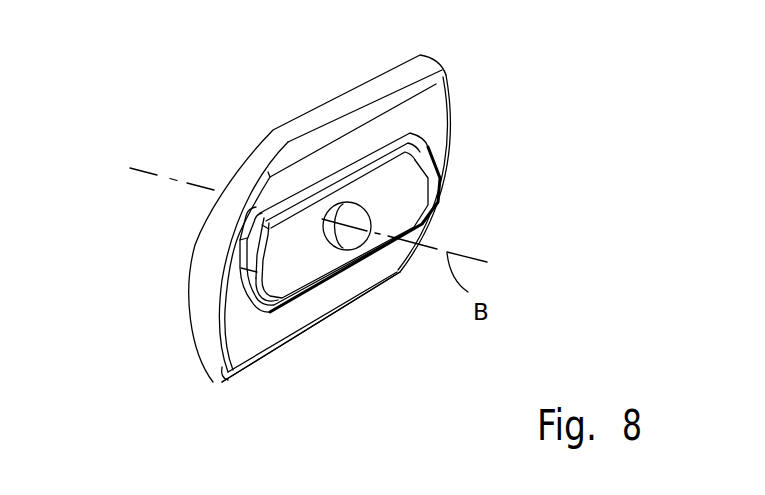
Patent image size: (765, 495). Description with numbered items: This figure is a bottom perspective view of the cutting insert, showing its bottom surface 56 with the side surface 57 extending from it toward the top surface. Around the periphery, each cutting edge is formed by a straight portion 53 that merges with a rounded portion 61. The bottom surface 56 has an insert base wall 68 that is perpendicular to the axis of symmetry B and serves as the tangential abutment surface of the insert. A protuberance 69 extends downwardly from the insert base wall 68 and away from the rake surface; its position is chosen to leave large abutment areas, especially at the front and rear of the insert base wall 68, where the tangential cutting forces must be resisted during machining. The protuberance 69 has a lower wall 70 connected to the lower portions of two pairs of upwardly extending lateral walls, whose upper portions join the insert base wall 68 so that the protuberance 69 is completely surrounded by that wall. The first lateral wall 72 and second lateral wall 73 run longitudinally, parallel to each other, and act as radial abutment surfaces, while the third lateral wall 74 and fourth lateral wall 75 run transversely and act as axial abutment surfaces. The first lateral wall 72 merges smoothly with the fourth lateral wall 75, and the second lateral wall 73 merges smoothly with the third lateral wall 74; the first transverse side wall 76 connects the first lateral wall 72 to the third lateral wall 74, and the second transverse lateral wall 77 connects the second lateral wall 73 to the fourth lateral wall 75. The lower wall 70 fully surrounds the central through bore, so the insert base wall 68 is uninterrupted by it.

The straight portion 53 is at (323, 104).
The bottom surface 56 is at (500, 138).
The side surface 57 is at (153, 290).
The rounded portion 61 is at (235, 165).
The insert base wall 68 is at (248, 333).
The protuberance 69 is at (403, 190).
The lower wall 70 is at (303, 267).
The first lateral wall 72 is at (300, 297).
The second lateral wall 73 is at (370, 160).
The third lateral wall 74 is at (433, 165).
The fourth lateral wall 75 is at (253, 292).
The first transverse side wall 76 is at (438, 208).
The second transverse lateral wall 77 is at (257, 247).